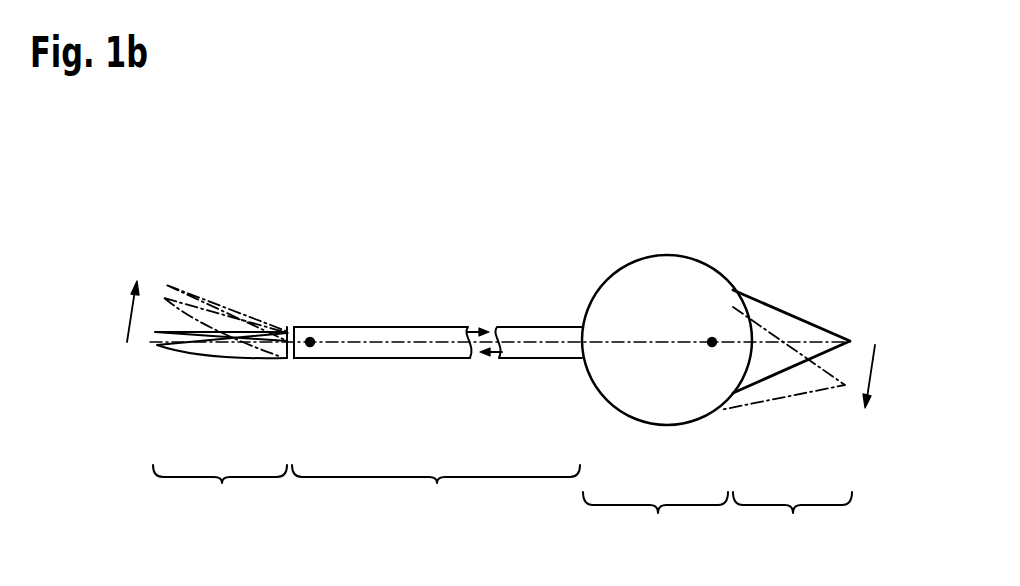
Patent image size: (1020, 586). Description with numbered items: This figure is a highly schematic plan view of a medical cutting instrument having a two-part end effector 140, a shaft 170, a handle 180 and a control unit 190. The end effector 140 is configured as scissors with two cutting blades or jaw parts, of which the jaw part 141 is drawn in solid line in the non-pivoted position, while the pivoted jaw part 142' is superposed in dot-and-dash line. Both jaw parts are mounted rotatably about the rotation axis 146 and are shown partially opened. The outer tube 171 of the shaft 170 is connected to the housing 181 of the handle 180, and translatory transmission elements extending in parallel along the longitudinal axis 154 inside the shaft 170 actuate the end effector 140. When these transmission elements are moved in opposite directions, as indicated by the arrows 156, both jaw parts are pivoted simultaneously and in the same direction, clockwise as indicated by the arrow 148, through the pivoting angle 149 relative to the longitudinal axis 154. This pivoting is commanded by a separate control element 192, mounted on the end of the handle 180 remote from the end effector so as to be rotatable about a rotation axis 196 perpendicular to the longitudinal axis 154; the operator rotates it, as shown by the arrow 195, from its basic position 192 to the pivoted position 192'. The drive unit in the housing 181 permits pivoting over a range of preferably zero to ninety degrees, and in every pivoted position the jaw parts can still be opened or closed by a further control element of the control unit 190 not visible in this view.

The end effector 140 is at (189, 380).
The jaw part 141 is at (222, 347).
The pivoted jaw part 142' is at (224, 297).
The rotation axis 146 is at (311, 339).
The arrow 148 is at (127, 322).
The pivoting angle 149 is at (292, 358).
The longitudinal axis 154 is at (377, 327).
The arrows 156 is at (488, 363).
The shaft 170 is at (500, 380).
The outer tube 171 is at (433, 327).
The handle 180 is at (667, 372).
The housing 181 is at (603, 283).
The control unit 190 is at (834, 394).
The control element 192 is at (797, 316).
The pivoted control element 192' is at (791, 392).
The arrow 195 is at (875, 370).
The rotation axis 196 is at (712, 338).